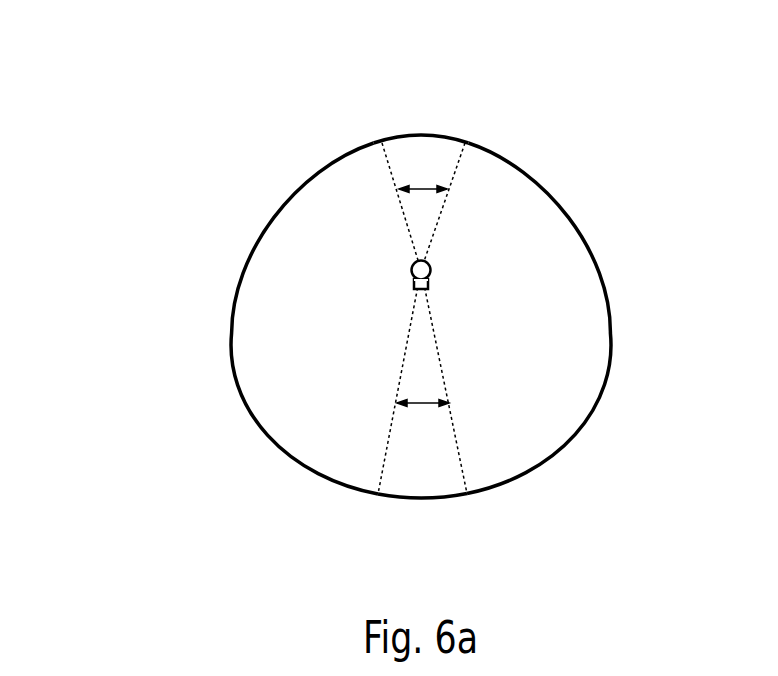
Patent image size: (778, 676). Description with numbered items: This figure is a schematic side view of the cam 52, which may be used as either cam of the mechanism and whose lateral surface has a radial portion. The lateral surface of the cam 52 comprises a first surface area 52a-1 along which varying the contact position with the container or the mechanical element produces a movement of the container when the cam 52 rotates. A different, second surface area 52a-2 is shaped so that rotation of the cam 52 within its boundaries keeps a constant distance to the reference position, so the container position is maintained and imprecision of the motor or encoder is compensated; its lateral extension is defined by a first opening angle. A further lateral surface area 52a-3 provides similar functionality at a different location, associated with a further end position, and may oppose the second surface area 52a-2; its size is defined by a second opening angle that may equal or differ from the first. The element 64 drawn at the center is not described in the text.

The cam 52 is at (697, 41).
The first surface area 52a-1 is at (563, 208).
The second surface area 52a-2 is at (423, 508).
The further lateral surface area 52a-3 is at (423, 112).
The light source 64 is at (412, 265).